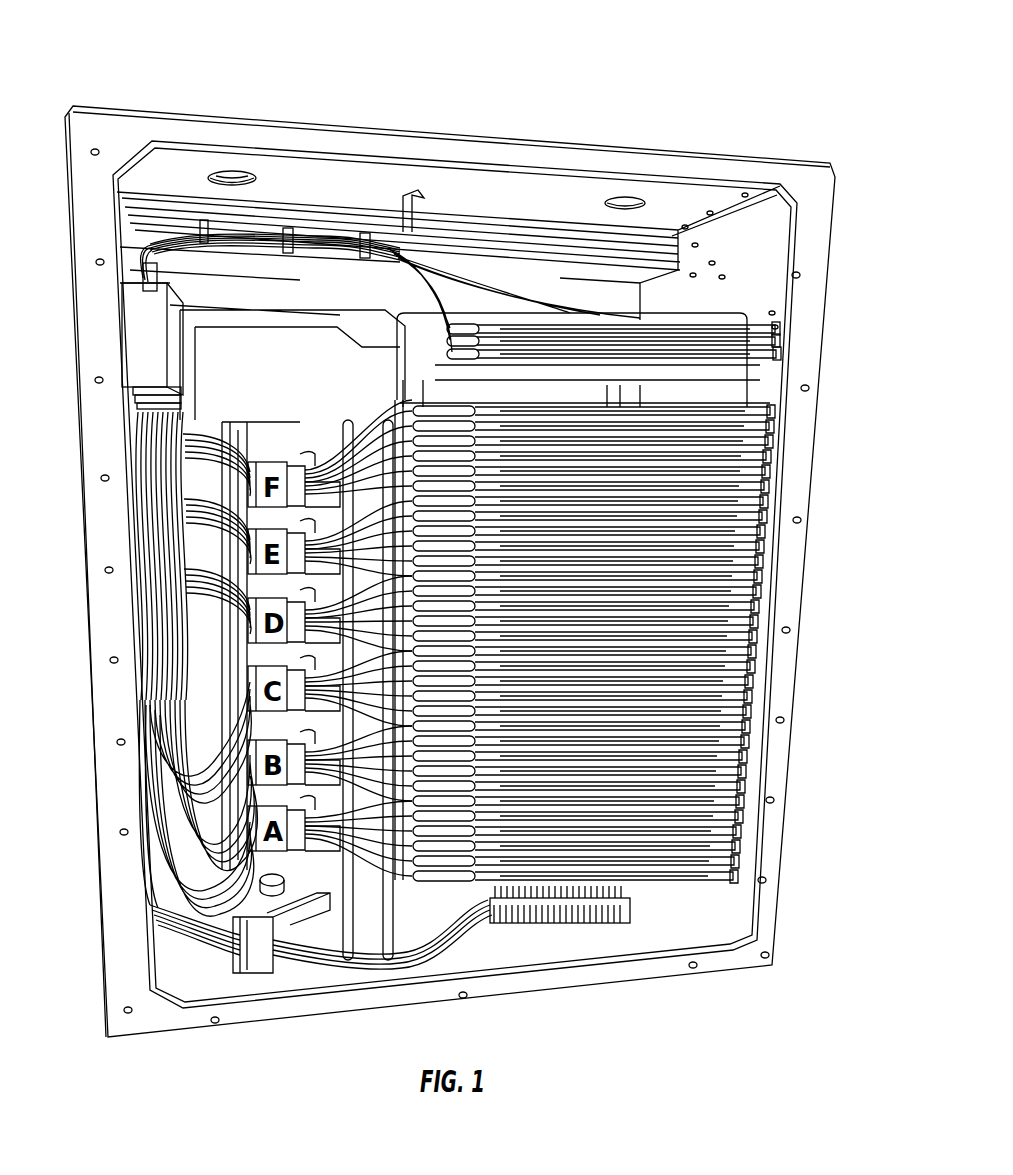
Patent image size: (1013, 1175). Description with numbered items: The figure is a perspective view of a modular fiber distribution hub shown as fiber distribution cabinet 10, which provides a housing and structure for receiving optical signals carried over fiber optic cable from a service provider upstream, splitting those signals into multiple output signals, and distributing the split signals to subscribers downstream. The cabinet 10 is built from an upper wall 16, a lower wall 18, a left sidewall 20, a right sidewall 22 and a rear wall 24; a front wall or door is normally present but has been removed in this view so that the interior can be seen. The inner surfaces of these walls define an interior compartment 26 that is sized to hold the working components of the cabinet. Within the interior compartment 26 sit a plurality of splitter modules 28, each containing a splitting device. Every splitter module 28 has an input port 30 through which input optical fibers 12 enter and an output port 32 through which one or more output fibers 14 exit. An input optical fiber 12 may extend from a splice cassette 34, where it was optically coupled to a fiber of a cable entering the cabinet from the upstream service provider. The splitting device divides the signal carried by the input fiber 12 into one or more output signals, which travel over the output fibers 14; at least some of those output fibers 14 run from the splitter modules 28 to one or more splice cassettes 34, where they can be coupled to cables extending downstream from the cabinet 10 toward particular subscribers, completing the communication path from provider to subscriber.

The fiber distribution cabinet 10 is at (742, 100).
The input optical fibers 12 is at (347, 247).
The output fibers 14 is at (140, 630).
The upper wall 16 is at (540, 190).
The lower wall 18 is at (650, 930).
The left sidewall 20 is at (120, 878).
The right sidewall 22 is at (742, 882).
The rear wall 24 is at (362, 318).
The interior compartment 26 is at (390, 955).
The splitter modules 28 is at (140, 337).
The input port 30 is at (148, 247).
The output port 32 is at (140, 400).
The splice cassettes 34 is at (785, 348).